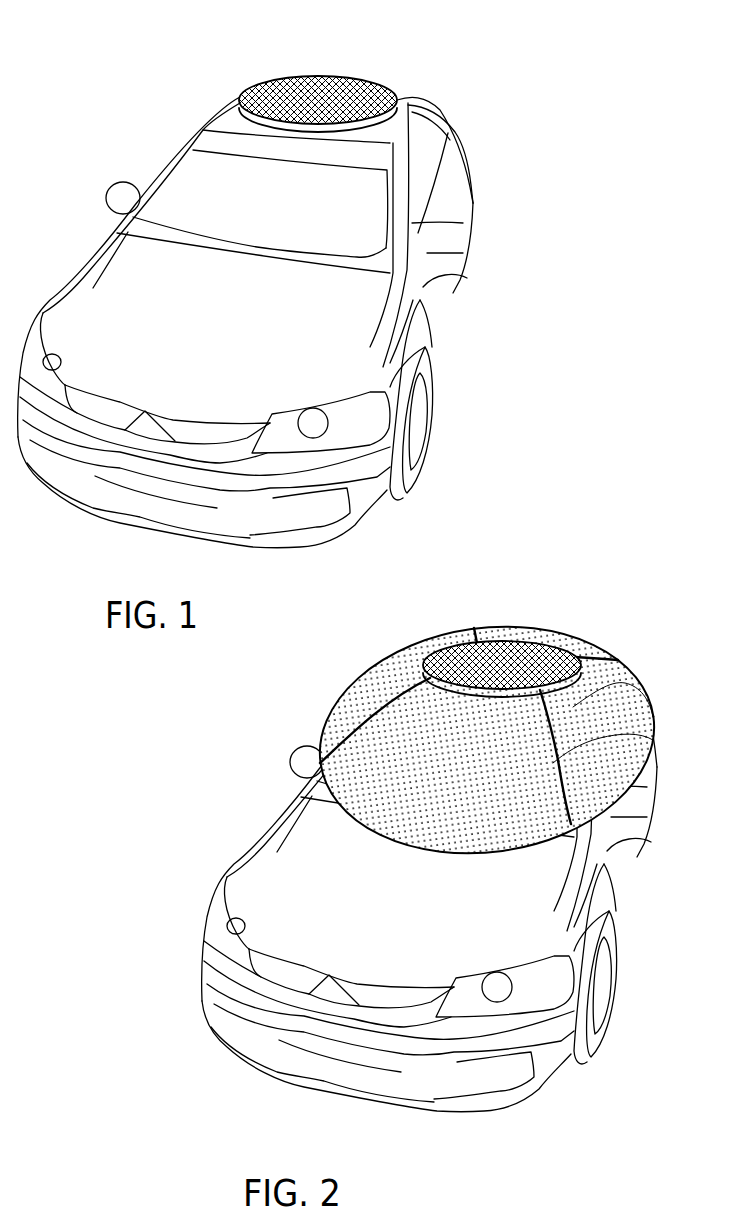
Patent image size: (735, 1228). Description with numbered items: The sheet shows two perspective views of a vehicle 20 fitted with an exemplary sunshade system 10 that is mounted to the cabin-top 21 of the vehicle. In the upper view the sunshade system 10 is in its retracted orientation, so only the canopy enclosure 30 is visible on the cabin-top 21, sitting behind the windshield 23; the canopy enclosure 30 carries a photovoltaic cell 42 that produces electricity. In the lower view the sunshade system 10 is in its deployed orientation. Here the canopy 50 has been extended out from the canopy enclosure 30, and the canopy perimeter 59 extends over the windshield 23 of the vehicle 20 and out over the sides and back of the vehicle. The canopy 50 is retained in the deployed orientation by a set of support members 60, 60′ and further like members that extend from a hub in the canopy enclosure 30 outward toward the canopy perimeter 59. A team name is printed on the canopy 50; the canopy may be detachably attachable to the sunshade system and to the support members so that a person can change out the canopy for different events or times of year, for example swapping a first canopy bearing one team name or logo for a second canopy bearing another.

In FIG. 1, the sunshade system 10 is at (218, 71).
In FIG. 2, the sunshade system 10 is at (398, 628).
In FIG. 1, the vehicle 20 is at (440, 273).
In FIG. 2, the vehicle 20 is at (643, 833).
In FIG. 1, the cabin-top 21 is at (413, 97).
In FIG. 1, the windshield 23 is at (193, 193).
In FIG. 2, the windshield 23 is at (323, 778).
In FIG. 1, the canopy enclosure 30 is at (360, 72).
In FIG. 2, the canopy enclosure 30 is at (537, 634).
In FIG. 1, the photovoltaic cell 42 is at (290, 76).
In FIG. 2, the photovoltaic cell 42 is at (492, 631).
In FIG. 2, the canopy 50 is at (580, 703).
In FIG. 2, the canopy perimeter 59 is at (430, 852).
In FIG. 2, the support member 60 is at (355, 731).
In FIG. 2, the support member 60′ is at (645, 753).